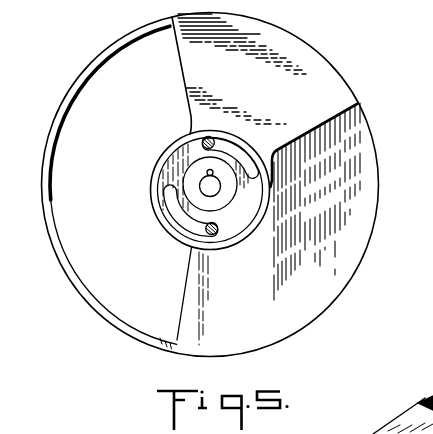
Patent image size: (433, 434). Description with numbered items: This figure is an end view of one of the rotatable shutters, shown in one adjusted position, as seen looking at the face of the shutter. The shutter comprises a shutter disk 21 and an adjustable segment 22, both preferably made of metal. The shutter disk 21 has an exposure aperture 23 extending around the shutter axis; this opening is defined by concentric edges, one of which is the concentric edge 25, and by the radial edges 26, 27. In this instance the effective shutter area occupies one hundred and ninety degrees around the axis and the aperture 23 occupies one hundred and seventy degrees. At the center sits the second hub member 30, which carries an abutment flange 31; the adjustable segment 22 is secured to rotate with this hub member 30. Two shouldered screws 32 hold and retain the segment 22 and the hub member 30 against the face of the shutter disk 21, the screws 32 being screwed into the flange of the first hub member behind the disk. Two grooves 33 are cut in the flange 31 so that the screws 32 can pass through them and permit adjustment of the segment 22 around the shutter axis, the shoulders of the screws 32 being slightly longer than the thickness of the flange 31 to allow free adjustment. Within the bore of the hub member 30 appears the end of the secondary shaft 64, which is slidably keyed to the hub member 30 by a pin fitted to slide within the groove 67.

The shutter disk 21 is at (212, 333).
The adjustable segment 22 is at (287, 56).
The exposure aperture 23 is at (128, 283).
The concentric edge 25 is at (156, 212).
The radial edge 26 is at (188, 293).
The radial edge 27 is at (183, 77).
The second hub member 30 is at (186, 174).
The abutment flange 31 is at (256, 205).
The shouldered screws 32 is at (211, 139).
The grooves 33 is at (240, 150).
The secondary shaft 64 is at (219, 188).
The groove 67 is at (207, 171).